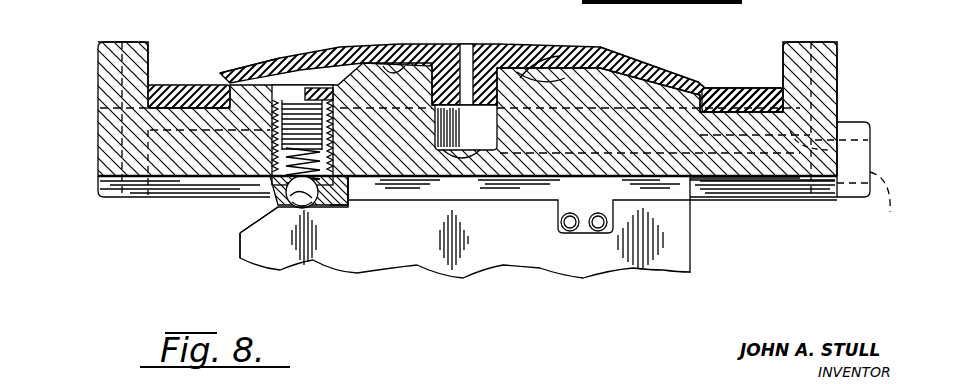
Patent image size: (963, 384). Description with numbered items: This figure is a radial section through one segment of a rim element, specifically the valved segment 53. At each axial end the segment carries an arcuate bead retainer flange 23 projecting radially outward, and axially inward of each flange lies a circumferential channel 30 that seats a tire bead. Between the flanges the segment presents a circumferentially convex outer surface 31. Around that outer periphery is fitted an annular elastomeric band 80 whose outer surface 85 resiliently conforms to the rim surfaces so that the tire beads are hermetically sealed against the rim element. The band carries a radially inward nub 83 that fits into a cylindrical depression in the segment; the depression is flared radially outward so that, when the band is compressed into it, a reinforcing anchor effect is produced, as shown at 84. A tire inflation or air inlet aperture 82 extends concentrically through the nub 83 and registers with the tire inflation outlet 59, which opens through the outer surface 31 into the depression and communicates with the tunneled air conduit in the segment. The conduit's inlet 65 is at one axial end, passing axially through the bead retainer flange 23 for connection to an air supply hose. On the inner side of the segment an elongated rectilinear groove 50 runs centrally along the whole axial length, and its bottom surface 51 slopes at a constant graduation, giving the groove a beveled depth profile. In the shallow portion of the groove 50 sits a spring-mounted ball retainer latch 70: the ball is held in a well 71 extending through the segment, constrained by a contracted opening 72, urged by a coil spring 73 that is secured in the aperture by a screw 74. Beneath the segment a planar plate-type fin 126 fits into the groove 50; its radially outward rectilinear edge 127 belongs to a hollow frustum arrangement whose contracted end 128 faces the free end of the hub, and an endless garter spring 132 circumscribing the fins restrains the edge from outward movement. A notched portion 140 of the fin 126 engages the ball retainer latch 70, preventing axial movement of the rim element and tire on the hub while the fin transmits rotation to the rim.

The bead retainer flange 23 is at (135, 42).
The circumferential channel 30 is at (188, 100).
The outer surface 31 is at (632, 58).
The groove 50 is at (745, 190).
The bottom surface 51 is at (775, 170).
The valved segment 53 is at (842, 44).
The tire inflation outlet 59 is at (465, 157).
The inlet 65 is at (853, 182).
The ball retainer latch 70 is at (292, 200).
The well 71 is at (282, 198).
The contracted opening 72 is at (303, 198).
The coil spring 73 is at (290, 157).
The screw 74 is at (294, 122).
The elastomeric band 80 is at (248, 72).
The air inlet aperture 82 is at (468, 46).
The nub 83 is at (544, 62).
The flared depression anchor 84 is at (398, 74).
The outer surface of the band 85 is at (340, 46).
The fin 126 is at (512, 242).
The rectilinear edge 127 is at (698, 178).
The contracted end 128 is at (255, 238).
The garter spring 132 is at (598, 235).
The notched portion 140 is at (322, 192).